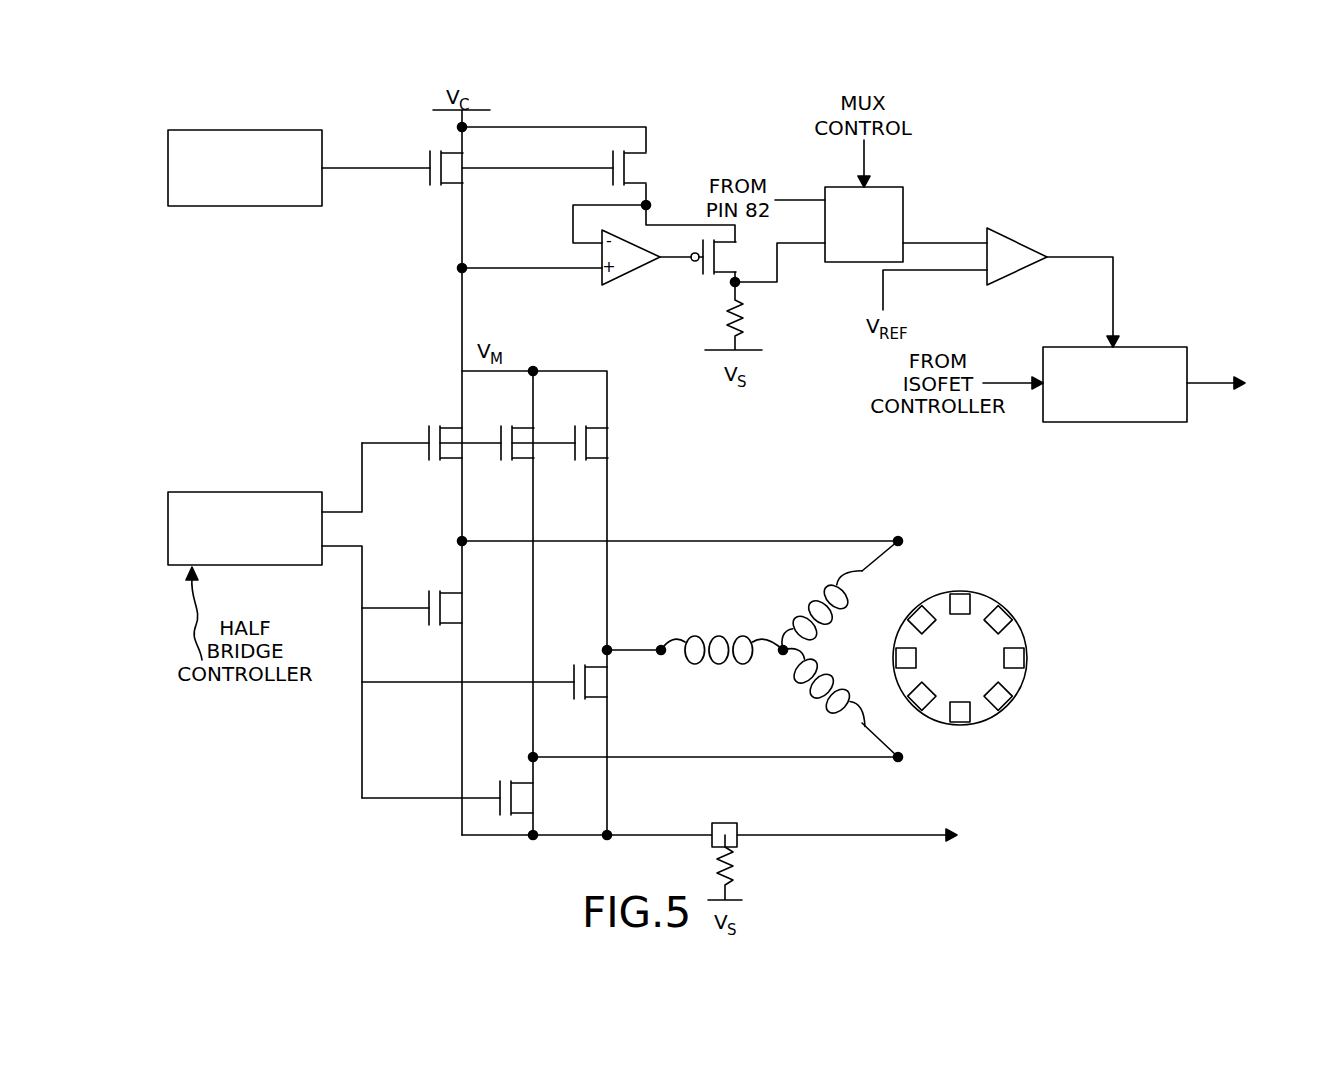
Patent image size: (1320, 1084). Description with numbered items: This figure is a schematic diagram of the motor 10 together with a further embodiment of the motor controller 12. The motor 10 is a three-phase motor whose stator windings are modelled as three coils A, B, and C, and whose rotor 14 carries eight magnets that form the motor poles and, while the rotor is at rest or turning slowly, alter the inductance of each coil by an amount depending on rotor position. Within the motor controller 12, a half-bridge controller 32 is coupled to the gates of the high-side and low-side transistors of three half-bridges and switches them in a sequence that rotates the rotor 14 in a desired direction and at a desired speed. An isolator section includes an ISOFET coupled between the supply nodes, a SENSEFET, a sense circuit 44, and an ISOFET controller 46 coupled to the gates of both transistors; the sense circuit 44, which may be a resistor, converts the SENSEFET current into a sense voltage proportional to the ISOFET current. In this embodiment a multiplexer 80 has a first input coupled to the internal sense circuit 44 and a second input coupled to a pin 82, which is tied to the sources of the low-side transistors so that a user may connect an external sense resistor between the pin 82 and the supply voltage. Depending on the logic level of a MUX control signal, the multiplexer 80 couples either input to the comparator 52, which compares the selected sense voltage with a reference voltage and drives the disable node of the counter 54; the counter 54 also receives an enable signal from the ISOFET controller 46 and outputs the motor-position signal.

The motor 10 is at (882, 636).
The motor controller 12 is at (1010, 157).
The rotor 14 is at (1003, 608).
The half-bridge controller 32 is at (222, 491).
The sense circuit 44 is at (745, 303).
The ISOFET controller 46 is at (183, 207).
The comparator 52 is at (1005, 235).
The counter 54 is at (1150, 345).
The multiplexer 80 is at (905, 210).
The pin 82 is at (727, 822).